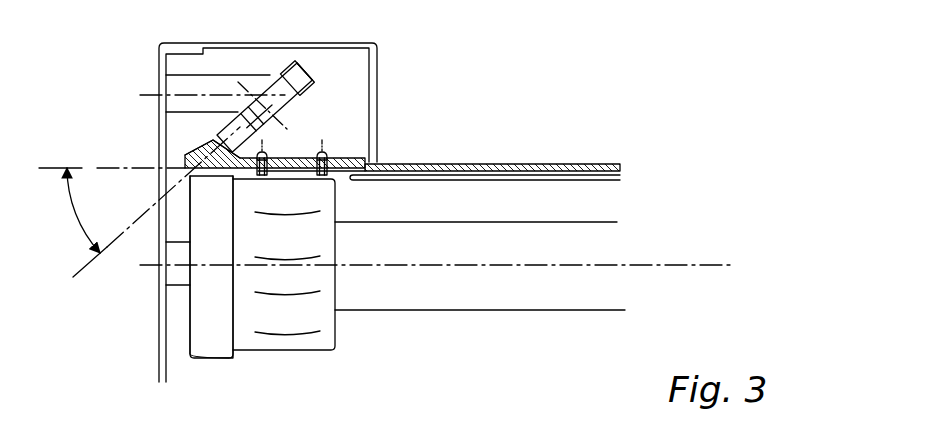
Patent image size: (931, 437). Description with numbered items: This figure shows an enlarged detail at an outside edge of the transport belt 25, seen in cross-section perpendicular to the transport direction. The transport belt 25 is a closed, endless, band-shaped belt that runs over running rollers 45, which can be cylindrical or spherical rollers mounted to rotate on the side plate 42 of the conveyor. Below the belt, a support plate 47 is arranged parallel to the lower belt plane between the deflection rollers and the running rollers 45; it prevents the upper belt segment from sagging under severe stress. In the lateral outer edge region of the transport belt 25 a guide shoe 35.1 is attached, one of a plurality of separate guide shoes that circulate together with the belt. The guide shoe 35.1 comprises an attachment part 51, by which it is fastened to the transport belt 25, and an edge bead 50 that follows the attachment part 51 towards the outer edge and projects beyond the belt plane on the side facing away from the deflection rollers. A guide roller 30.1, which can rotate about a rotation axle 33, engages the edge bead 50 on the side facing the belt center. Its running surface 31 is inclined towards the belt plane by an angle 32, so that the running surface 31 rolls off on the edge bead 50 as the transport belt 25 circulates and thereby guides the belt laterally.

The guide roller 30.1 is at (287, 78).
The running surface 31 is at (320, 80).
The rotation axle 33 is at (291, 124).
The guide shoe 35.1 is at (310, 144).
The transport belt 25 is at (557, 165).
The support plate 47 is at (601, 178).
The attachment part 51 is at (343, 160).
The edge bead 50 is at (200, 151).
The angle 32 is at (73, 216).
The side plate 42 is at (164, 327).
The running roller 45 is at (249, 357).